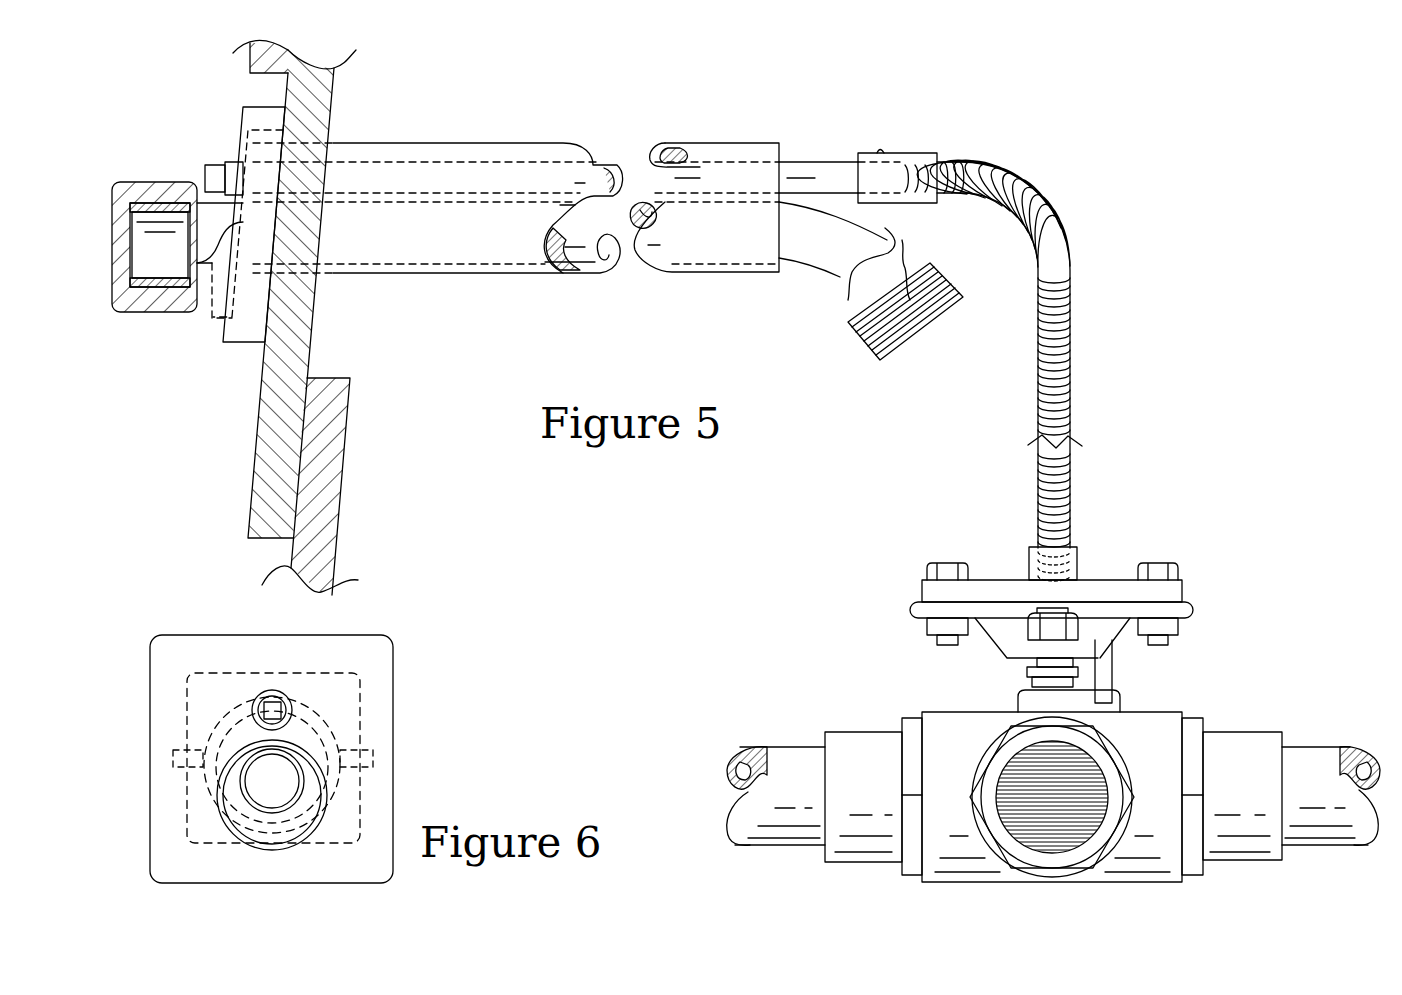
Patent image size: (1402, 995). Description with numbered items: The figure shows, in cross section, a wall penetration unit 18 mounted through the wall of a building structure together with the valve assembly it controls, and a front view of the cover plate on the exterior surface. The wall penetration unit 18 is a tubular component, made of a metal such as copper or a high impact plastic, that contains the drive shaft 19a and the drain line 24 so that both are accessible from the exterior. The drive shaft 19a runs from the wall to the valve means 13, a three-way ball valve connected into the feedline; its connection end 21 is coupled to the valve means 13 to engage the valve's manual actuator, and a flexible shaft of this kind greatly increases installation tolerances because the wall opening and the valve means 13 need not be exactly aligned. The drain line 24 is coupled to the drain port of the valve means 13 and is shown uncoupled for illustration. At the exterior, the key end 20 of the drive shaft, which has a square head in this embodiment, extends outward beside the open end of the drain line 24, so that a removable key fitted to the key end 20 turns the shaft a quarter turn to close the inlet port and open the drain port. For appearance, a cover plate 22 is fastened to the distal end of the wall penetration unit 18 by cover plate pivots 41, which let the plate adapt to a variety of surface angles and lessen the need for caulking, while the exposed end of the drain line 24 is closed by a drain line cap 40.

In FIG. 5, the valve means 13 is at (1158, 713).
In FIG. 5, the wall penetration unit 18 is at (468, 143).
In FIG. 5, the drive shaft 19a is at (1072, 340).
In FIG. 5, the key end 20 is at (215, 165).
In FIG. 6, the key end 20 is at (285, 716).
In FIG. 5, the connection end 21 is at (1077, 565).
In FIG. 5, the cover plate 22 is at (247, 107).
In FIG. 6, the cover plate 22 is at (395, 670).
In FIG. 5, the drain line 24 is at (835, 265).
In FIG. 6, the drain line 24 is at (237, 783).
In FIG. 5, the drain line cap 40 is at (152, 183).
In FIG. 5, the cover plate pivots 41 is at (213, 320).
In FIG. 6, the cover plate pivots 41 is at (173, 763).